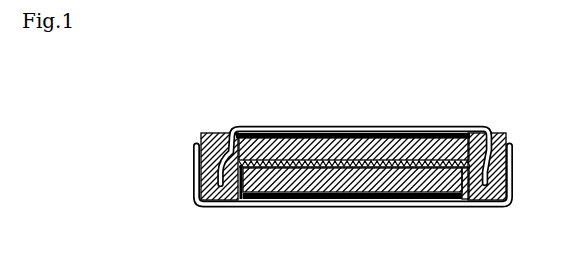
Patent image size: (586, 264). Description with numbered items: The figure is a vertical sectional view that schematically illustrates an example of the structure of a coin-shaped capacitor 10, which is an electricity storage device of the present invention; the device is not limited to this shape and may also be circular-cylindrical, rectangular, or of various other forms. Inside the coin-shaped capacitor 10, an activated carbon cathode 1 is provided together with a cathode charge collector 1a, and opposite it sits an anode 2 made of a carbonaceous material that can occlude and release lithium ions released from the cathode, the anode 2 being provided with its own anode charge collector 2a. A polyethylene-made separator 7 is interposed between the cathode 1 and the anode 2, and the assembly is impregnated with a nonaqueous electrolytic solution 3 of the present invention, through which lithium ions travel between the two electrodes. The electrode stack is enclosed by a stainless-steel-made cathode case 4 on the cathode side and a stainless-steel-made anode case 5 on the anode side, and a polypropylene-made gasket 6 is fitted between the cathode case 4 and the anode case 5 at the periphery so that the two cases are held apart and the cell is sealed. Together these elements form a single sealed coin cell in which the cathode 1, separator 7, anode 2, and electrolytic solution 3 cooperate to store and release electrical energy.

The coin-shaped capacitor 10 is at (403, 110).
The activated carbon cathode 1 is at (318, 177).
The cathode charge collector 1a is at (270, 199).
The anode 2 is at (379, 142).
The anode charge collector 2a is at (308, 135).
The nonaqueous electrolytic solution 3 is at (233, 140).
The cathode case 4 is at (389, 197).
The anode case 5 is at (447, 128).
The gasket 6 is at (207, 205).
The separator 7 is at (421, 204).